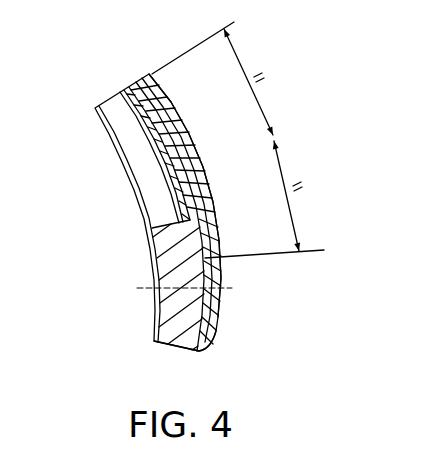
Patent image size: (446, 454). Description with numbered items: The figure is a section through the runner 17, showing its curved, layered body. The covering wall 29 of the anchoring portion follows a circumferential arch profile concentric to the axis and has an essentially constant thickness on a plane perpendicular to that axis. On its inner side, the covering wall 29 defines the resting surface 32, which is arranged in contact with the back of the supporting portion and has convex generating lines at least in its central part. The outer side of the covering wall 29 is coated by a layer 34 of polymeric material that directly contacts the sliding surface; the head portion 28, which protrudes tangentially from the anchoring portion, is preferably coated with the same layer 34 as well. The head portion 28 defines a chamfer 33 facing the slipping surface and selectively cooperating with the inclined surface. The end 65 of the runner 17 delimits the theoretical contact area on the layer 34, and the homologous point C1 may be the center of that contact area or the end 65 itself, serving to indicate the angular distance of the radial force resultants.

The runner 17 is at (115, 96).
The end 65 is at (95, 108).
The resting surface 32 is at (163, 178).
The covering wall 29 is at (288, 133).
The layer 34 is at (217, 219).
The homologous point C1 is at (198, 166).
The head portion 28 is at (165, 268).
The chamfer 33 is at (205, 346).